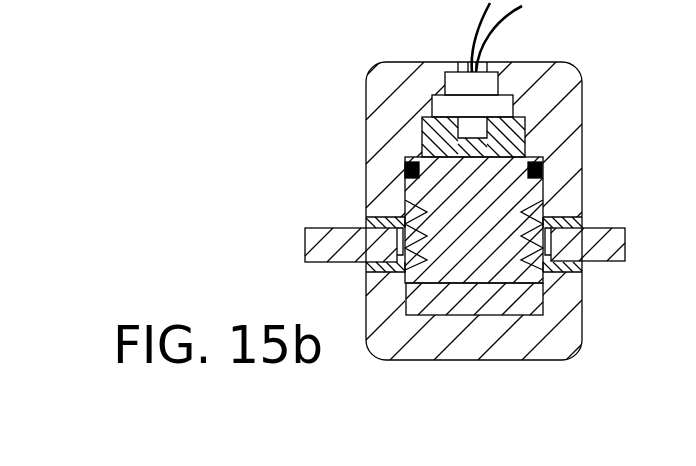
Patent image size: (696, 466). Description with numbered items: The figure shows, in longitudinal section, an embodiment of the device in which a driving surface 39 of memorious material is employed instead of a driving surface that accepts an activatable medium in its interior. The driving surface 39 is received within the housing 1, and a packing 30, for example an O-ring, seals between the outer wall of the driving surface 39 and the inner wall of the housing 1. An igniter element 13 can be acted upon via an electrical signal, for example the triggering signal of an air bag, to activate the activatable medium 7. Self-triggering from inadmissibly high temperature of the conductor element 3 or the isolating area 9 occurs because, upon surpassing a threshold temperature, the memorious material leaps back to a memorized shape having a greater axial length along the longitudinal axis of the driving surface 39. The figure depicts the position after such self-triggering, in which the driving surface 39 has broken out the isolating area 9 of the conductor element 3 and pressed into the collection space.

The housing 1 is at (555, 82).
The igniter element 13 is at (493, 73).
The activatable medium 7 is at (514, 130).
The driving surface 39 is at (505, 186).
The packing 30 is at (540, 165).
The conductor element 3 is at (615, 240).
The isolating area 9 is at (527, 302).